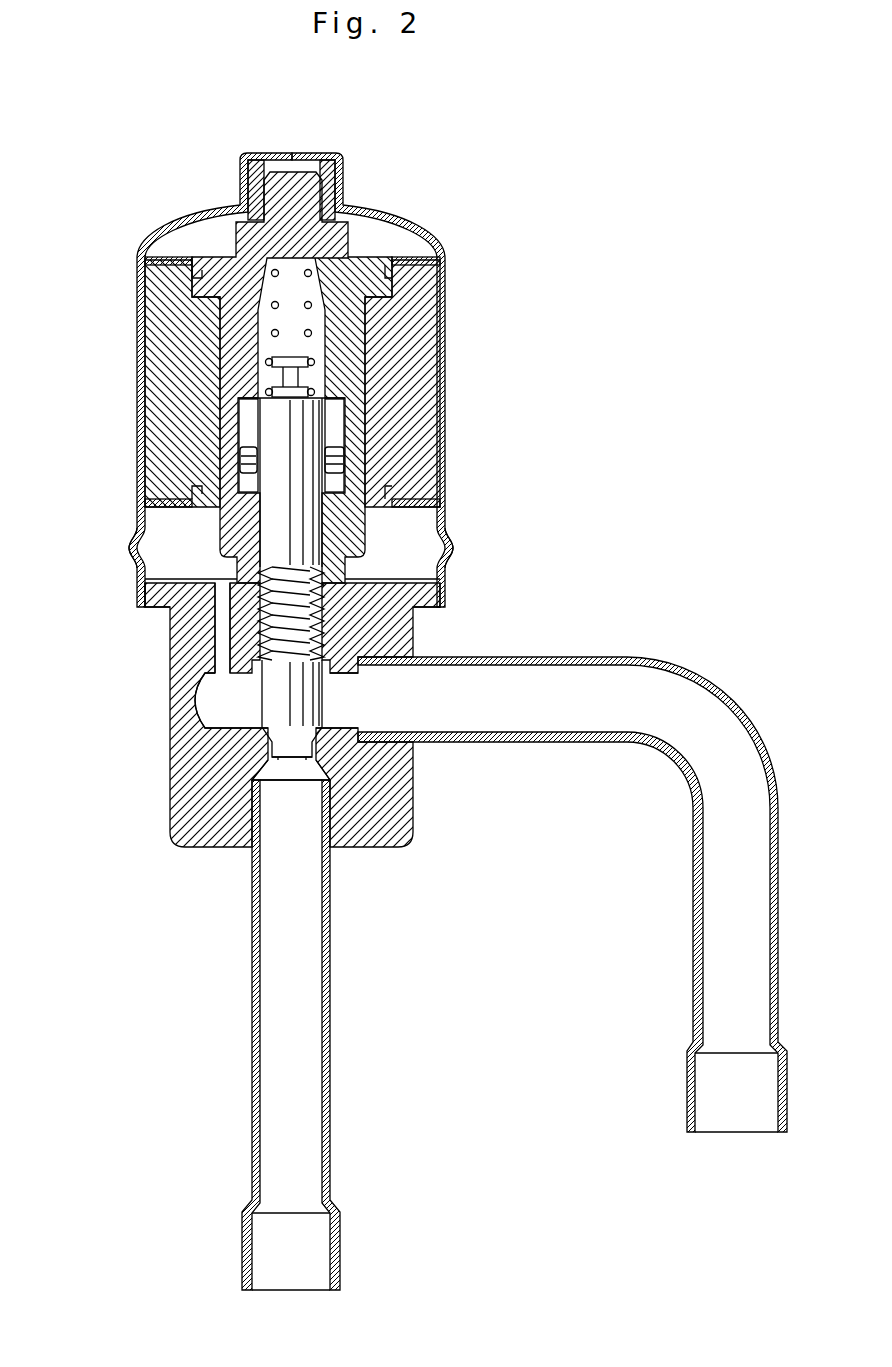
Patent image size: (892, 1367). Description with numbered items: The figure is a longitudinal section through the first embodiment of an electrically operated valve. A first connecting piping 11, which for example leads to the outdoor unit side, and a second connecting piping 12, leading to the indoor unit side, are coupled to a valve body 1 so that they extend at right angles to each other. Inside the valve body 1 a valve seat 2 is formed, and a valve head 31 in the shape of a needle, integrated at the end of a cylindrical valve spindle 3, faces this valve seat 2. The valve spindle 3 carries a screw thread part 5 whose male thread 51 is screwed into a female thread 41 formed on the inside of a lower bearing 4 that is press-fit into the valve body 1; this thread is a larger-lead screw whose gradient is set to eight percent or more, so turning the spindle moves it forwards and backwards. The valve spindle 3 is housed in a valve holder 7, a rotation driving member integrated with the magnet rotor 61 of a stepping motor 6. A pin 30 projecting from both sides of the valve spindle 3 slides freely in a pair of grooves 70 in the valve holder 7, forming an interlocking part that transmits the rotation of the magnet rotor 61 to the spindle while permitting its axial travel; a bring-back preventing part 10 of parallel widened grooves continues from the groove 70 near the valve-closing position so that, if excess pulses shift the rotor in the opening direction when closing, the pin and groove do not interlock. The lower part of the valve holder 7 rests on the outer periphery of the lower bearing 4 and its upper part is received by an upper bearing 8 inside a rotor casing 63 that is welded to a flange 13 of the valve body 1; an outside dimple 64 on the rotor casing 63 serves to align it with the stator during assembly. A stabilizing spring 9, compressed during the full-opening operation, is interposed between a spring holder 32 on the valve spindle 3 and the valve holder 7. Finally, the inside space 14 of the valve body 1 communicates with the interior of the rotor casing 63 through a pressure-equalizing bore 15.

The valve body 1 is at (163, 820).
The valve seat 2 is at (280, 750).
The valve spindle 3 is at (340, 405).
The lower bearing 4 is at (250, 574).
The female thread 41 is at (243, 581).
The screw thread part 5 is at (327, 630).
The stepping motor 6 is at (212, 258).
The magnet rotor 61 is at (147, 250).
The rotor casing 63 is at (440, 240).
The outside dimple 64 is at (130, 547).
The valve holder 7 is at (238, 236).
The upper bearing 8 is at (343, 183).
The stabilizing spring 9 is at (322, 292).
The bring-back preventing part 10 is at (250, 472).
The first connecting piping 11 is at (255, 1097).
The second connecting piping 12 is at (696, 688).
The flange 13 is at (140, 605).
The inside space 14 is at (225, 704).
The pressure-equalizing bore 15 is at (217, 645).
The pin 30 is at (245, 452).
The valve head 31 is at (272, 760).
The spring holder 32 is at (312, 366).
The male thread 51 is at (430, 602).
The grooves 70 is at (247, 422).